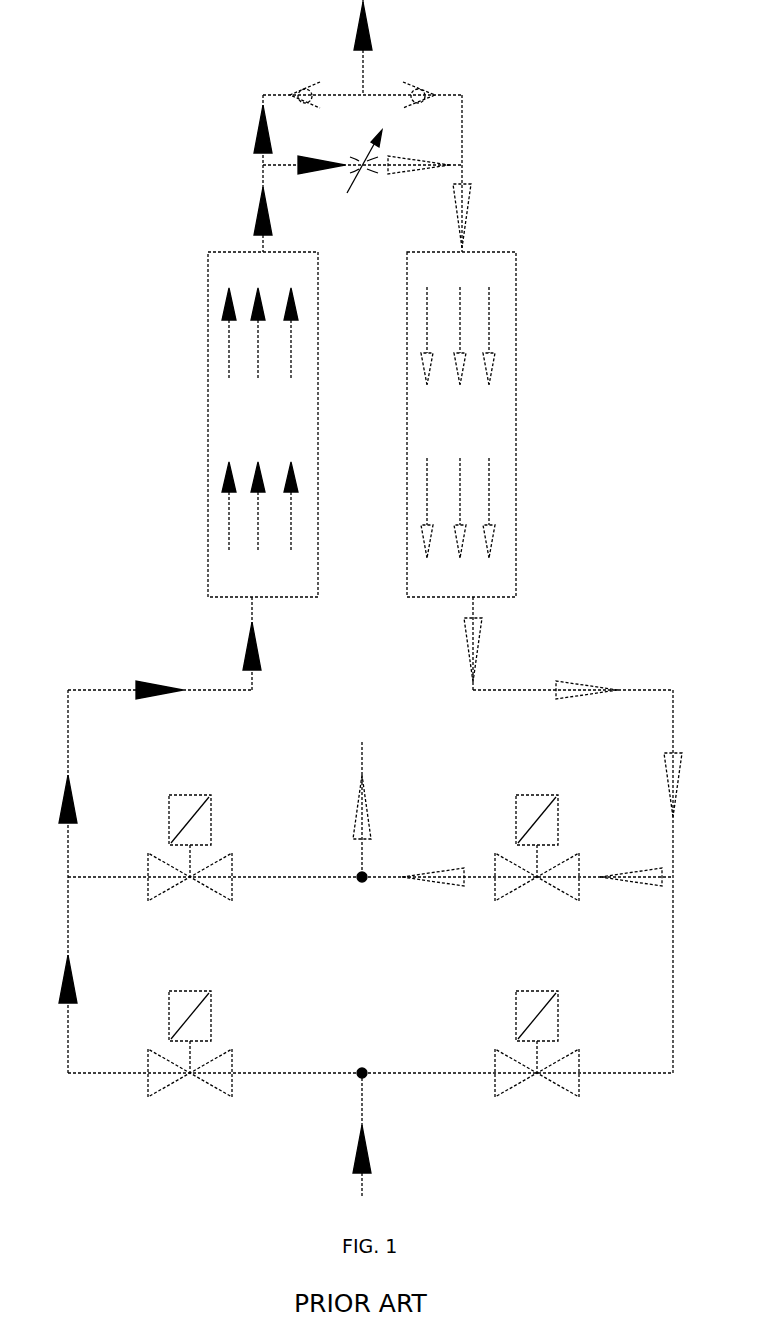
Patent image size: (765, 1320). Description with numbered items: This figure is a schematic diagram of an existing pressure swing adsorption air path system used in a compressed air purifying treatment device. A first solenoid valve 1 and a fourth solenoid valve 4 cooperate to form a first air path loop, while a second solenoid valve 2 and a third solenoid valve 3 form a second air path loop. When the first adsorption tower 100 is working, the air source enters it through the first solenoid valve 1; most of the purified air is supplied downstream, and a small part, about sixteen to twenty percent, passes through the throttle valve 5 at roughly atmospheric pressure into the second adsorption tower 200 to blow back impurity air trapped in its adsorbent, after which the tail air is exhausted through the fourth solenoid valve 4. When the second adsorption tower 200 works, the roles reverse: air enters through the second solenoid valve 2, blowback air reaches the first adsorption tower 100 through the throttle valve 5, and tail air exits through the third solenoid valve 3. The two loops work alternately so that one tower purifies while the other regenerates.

The first solenoid valve 1 is at (172, 1082).
The second solenoid valve 2 is at (520, 1082).
The third solenoid valve 3 is at (162, 875).
The fourth solenoid valve 4 is at (565, 872).
The throttle valve 5 is at (363, 175).
The first adsorption tower 100 is at (208, 398).
The second adsorption tower 200 is at (516, 415).